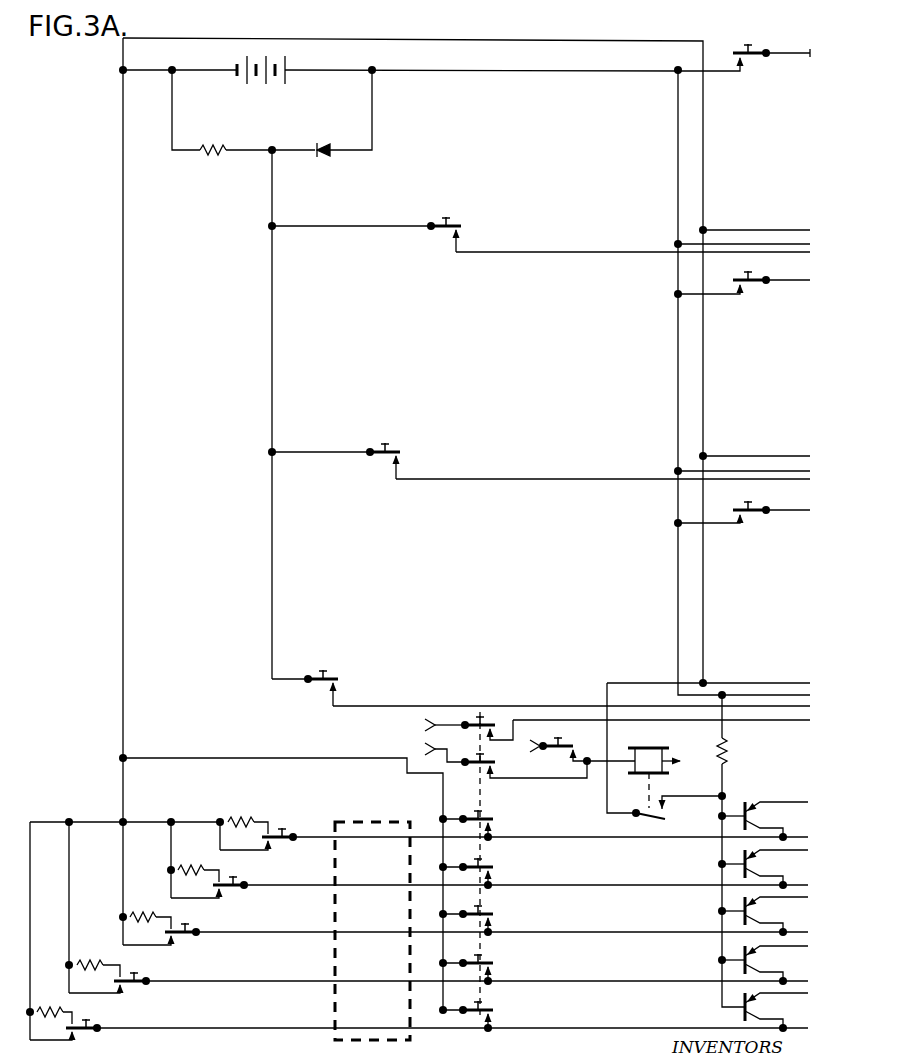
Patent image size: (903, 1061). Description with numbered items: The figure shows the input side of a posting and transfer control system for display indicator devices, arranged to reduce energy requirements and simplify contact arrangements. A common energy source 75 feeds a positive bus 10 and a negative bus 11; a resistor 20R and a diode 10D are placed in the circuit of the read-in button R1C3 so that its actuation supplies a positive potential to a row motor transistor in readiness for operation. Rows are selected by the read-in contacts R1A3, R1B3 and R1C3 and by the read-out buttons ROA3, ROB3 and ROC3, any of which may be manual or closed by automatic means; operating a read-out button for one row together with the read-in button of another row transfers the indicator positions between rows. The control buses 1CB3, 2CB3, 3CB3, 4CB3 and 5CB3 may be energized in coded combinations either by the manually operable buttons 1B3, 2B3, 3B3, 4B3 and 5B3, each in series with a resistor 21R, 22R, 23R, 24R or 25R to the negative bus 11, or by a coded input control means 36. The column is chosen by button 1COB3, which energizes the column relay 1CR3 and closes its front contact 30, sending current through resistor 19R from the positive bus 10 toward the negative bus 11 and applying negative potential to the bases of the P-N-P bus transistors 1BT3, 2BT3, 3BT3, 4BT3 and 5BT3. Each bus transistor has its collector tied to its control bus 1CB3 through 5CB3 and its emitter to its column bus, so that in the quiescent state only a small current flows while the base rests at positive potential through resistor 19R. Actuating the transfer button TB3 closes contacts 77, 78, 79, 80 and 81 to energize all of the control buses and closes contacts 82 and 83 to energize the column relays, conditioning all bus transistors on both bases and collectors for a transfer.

The negative bus 11 is at (520, 40).
The positive bus 10 is at (517, 71).
The common energy source 75 is at (284, 78).
The resistor 20R is at (217, 160).
The diode 10D is at (323, 160).
The read-in button R1C3 is at (541, 222).
The read-in contact R1B3 is at (541, 449).
The read-in contact R1A3 is at (541, 677).
The read-out button ROC3 is at (771, 40).
The read-out button ROB3 is at (742, 276).
The read-out button ROA3 is at (742, 505).
The transfer button TB3 is at (477, 855).
The contact 83 is at (457, 733).
The contact 82 is at (489, 765).
The button 1COB3 is at (569, 742).
The column relay 1CR3 is at (655, 743).
The front contact 30 is at (644, 804).
The resistor 19R is at (727, 758).
The bus transistor 5BT3 is at (763, 821).
The bus transistor 4BT3 is at (763, 869).
The bus transistor 3BT3 is at (763, 916).
The bus transistor 2BT3 is at (763, 965).
The bus transistor 1BT3 is at (776, 1012).
The control bus 5CB3 is at (548, 838).
The control bus 4CB3 is at (548, 886).
The control bus 3CB3 is at (548, 933).
The control bus 2CB3 is at (548, 982).
The control bus 1CB3 is at (548, 1029).
The contact 81 is at (473, 817).
The contact 80 is at (473, 865).
The contact 79 is at (473, 912).
The contact 78 is at (473, 961).
The contact 77 is at (473, 1008).
The resistor 25R is at (246, 815).
The resistor 24R is at (193, 863).
The resistor 23R is at (149, 910).
The resistor 22R is at (92, 958).
The resistor 21R is at (49, 1005).
The manually operable button 5B3 is at (264, 829).
The manually operable button 4B3 is at (215, 877).
The manually operable button 3B3 is at (167, 923).
The manually operable button 2B3 is at (114, 972).
The bus control button 1B3 is at (68, 1019).
The code input control means 36 is at (333, 1039).